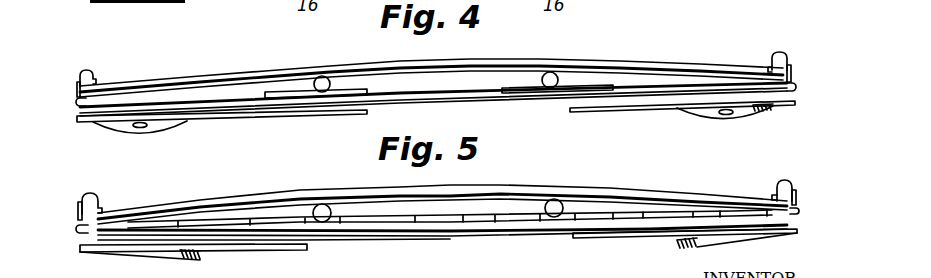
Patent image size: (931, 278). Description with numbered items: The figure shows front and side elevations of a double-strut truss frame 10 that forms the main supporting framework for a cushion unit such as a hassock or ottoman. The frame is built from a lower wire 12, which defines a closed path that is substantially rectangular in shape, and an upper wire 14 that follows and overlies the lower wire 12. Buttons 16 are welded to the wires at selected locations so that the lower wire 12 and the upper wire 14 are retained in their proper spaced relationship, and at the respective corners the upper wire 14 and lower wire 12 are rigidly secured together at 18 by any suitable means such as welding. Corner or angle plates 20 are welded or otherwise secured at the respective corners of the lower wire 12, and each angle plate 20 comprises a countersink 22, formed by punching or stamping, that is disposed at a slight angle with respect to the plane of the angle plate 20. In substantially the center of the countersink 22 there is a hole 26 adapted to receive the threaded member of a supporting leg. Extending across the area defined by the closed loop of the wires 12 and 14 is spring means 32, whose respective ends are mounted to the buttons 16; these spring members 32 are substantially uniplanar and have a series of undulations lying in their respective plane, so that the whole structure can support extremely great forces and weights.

In FIG. 4, the double-strut truss frame 10 is at (156, 72).
In FIG. 5, the double-strut truss frame 10 is at (417, 232).
In FIG. 4, the lower wire 12 is at (326, 101).
In FIG. 5, the lower wire 12 is at (503, 232).
In FIG. 4, the upper wire 14 is at (200, 78).
In FIG. 5, the upper wire 14 is at (523, 193).
In FIG. 4, the buttons 16 is at (78, 83).
In FIG. 5, the buttons 16 is at (80, 212).
In FIG. 4, the corner connection 18 is at (78, 101).
In FIG. 5, the corner connection 18 is at (79, 232).
In FIG. 4, the corner or angle plates 20 is at (252, 114).
In FIG. 5, the corner or angle plates 20 is at (268, 243).
In FIG. 4, the countersink 22 is at (177, 125).
In FIG. 5, the countersink 22 is at (157, 258).
In FIG. 4, the hole 26 is at (142, 128).
In FIG. 4, the spring means 32 is at (306, 89).
In FIG. 5, the spring means 32 is at (368, 220).